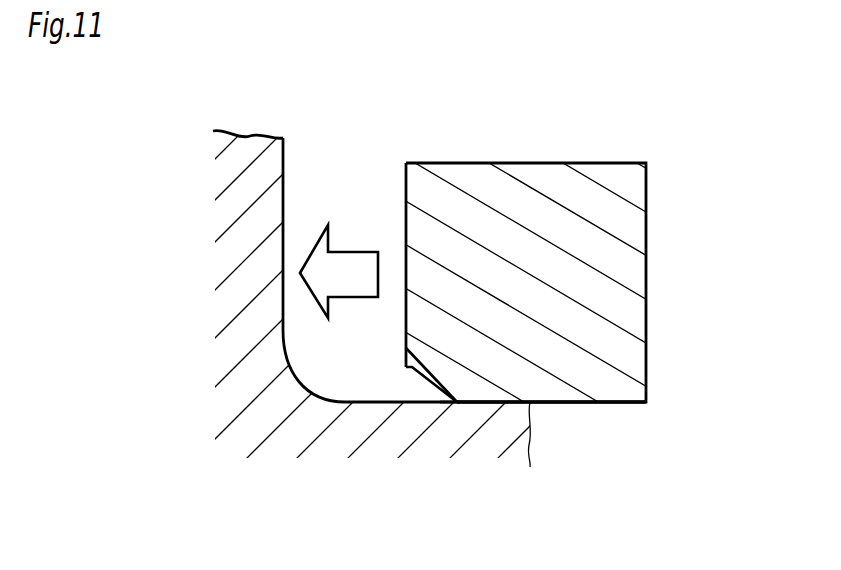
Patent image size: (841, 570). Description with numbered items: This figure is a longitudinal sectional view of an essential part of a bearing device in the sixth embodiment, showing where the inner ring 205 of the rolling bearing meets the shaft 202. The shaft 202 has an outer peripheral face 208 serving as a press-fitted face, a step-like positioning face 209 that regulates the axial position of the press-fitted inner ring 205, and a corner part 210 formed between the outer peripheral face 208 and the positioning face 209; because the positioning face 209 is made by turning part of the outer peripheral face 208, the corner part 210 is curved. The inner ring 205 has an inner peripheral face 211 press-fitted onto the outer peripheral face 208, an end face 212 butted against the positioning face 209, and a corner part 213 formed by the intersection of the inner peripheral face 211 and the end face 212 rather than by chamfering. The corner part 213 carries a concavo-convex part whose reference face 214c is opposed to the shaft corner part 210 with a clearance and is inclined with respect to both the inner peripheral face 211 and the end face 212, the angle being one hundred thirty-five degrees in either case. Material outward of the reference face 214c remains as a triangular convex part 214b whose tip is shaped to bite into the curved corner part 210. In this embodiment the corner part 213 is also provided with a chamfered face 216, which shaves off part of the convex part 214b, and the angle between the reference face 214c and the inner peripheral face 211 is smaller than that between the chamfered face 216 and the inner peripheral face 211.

The shaft 202 is at (262, 160).
The inner ring 205 is at (630, 268).
The outer peripheral face 208 is at (490, 401).
The positioning face 209 is at (284, 200).
The corner part 210 is at (295, 377).
The inner peripheral face 211 is at (598, 402).
The end face 212 is at (406, 212).
The corner part 213 is at (404, 367).
The convex part 214b is at (412, 370).
The reference face 214c is at (440, 383).
The chamfered face 216 is at (443, 402).